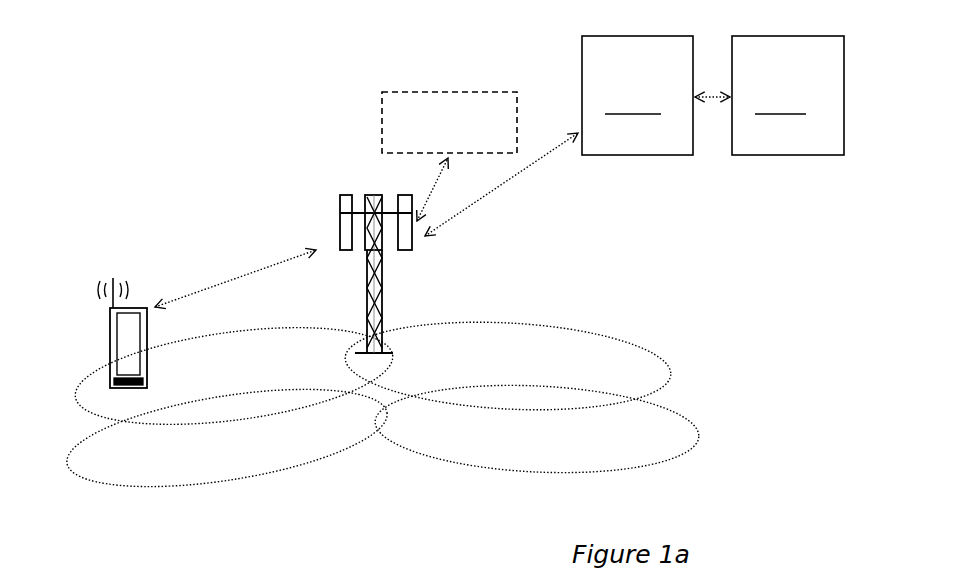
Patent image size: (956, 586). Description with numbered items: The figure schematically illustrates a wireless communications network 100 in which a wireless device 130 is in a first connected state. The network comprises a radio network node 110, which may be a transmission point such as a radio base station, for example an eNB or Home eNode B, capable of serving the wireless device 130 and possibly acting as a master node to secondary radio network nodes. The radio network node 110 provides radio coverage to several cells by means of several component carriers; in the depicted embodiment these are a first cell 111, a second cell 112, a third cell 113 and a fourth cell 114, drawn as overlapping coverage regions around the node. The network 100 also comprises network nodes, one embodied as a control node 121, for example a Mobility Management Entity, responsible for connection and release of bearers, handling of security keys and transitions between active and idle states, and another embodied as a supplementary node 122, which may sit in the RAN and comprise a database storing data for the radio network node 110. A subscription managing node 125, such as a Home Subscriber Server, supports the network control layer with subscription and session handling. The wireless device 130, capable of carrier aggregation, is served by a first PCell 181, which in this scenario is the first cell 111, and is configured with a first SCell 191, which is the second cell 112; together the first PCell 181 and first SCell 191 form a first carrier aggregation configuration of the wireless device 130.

The wireless communications network 100 is at (160, 104).
The radio network node 110 is at (340, 222).
The first cell 111 is at (222, 381).
The first PCell 181 is at (268, 381).
The second cell 112 is at (184, 474).
The first SCell 191 is at (232, 474).
The third cell 113 is at (478, 366).
The fourth cell 114 is at (574, 455).
The control node 121 is at (652, 86).
The supplementary node 122 is at (452, 137).
The subscription managing node 125 is at (802, 86).
The wireless device 130 is at (103, 342).